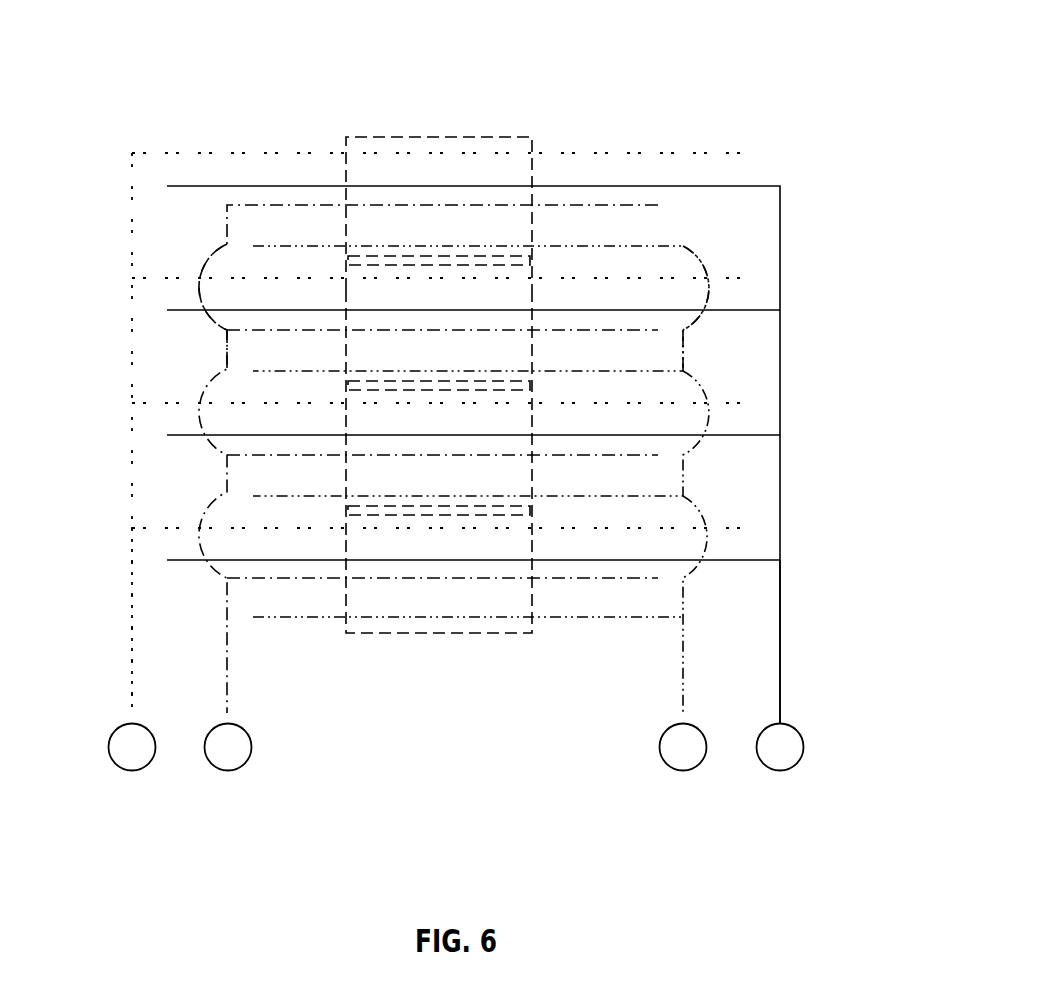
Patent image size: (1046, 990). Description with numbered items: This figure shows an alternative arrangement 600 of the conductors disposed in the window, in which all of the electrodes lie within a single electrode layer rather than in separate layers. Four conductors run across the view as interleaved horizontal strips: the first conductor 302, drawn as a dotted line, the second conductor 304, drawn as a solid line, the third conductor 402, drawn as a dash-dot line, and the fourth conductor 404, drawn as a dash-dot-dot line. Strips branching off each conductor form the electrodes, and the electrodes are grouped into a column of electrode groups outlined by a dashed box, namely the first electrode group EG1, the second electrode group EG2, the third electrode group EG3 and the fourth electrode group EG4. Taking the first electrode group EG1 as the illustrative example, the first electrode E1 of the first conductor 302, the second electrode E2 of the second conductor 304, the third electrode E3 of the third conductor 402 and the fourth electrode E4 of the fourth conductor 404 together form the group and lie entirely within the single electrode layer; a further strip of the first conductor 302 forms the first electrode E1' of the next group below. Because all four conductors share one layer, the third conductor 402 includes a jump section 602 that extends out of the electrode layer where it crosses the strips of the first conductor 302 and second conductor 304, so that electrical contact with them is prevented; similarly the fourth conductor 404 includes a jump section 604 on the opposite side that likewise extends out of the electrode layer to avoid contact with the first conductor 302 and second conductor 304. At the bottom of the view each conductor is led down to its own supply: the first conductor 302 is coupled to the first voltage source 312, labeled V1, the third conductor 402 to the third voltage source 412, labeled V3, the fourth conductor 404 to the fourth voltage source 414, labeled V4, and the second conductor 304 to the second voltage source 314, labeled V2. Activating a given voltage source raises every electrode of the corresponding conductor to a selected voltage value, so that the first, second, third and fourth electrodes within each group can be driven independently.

The alternative arrangement 600 is at (806, 40).
The first electrode E1 is at (438, 358).
The first electrode E1' is at (409, 254).
The second electrode E2 is at (333, 184).
The third electrode E3 is at (308, 205).
The fourth electrode E4 is at (263, 246).
The first electrode group EG1 is at (437, 136).
The second electrode group EG2 is at (533, 322).
The third electrode group EG3 is at (533, 447).
The fourth electrode group EG4 is at (450, 634).
The jump section 602 is at (200, 300).
The jump section 604 is at (681, 244).
The first conductor 302 is at (126, 488).
The second conductor 304 is at (788, 590).
The third conductor 402 is at (222, 364).
The fourth conductor 404 is at (692, 353).
The first voltage source 312 is at (124, 786).
The second voltage source 314 is at (771, 786).
The third voltage source 412 is at (219, 786).
The fourth voltage source 414 is at (674, 786).
The first voltage V1 is at (132, 747).
The second voltage V2 is at (780, 747).
The third voltage V3 is at (228, 747).
The fourth voltage V4 is at (683, 747).